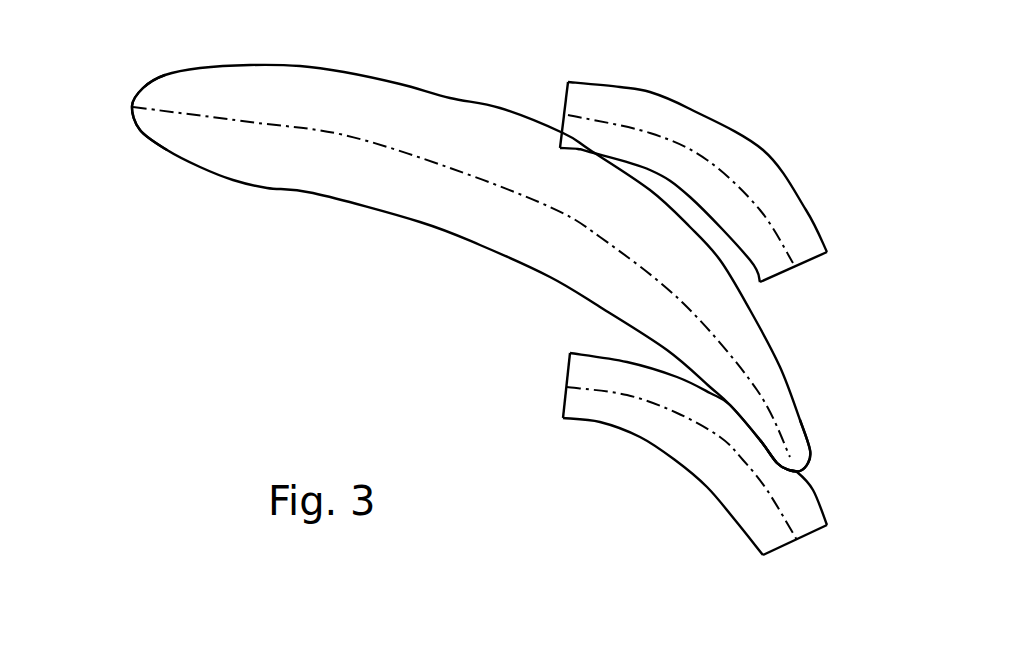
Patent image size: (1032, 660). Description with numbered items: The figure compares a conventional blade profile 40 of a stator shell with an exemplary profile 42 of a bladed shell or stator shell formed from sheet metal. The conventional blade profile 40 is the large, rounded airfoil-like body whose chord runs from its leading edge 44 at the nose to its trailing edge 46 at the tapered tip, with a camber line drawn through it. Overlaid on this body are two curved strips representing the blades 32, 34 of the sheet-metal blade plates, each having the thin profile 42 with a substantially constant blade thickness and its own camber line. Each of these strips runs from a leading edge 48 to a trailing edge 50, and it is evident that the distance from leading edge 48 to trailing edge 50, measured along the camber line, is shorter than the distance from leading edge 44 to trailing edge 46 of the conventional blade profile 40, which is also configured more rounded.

The blades 32 is at (691, 92).
The blades 34 is at (772, 144).
The conventional blade profile 40 is at (306, 197).
The profile 42 is at (806, 212).
The leading edge 44 is at (133, 107).
The trailing edge 46 is at (800, 472).
The leading edge 48 is at (568, 115).
The trailing edge 50 is at (795, 267).